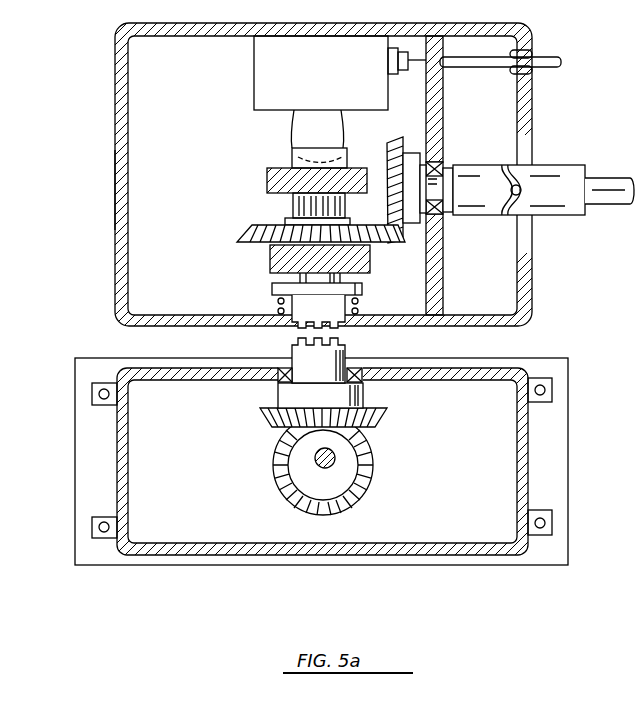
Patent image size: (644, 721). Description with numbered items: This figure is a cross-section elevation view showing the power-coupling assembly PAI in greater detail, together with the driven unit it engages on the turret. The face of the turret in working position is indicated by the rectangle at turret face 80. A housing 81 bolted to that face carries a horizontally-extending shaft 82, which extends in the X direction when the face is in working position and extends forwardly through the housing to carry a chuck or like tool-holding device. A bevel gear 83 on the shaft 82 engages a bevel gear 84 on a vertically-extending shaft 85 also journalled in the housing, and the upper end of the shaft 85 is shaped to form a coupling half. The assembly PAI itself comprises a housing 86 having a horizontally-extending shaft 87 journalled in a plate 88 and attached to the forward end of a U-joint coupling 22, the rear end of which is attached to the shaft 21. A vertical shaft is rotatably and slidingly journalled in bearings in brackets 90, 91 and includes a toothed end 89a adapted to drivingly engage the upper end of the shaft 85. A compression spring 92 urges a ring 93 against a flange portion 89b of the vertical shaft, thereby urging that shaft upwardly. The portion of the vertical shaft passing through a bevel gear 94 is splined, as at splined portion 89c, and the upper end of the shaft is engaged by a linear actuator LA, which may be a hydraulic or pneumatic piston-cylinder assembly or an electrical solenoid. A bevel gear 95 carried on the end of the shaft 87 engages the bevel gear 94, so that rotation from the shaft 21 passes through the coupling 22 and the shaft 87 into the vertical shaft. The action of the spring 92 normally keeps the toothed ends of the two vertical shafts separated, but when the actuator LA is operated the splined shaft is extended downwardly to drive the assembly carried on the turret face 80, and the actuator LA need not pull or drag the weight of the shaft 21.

The shaft 21 is at (612, 205).
The U-joint coupling 22 is at (560, 168).
The turret face 80 is at (73, 553).
The housing 81 is at (132, 478).
The shaft 82 is at (328, 468).
The bevel gear 83 is at (375, 467).
The bevel gear 84 is at (386, 410).
The shaft 85 is at (323, 372).
The housing 86 is at (532, 297).
The shaft 87 is at (447, 162).
The plate 88 is at (444, 266).
The toothed end 89a is at (293, 328).
The flange portion 89b is at (270, 288).
The splined portion 89c is at (293, 207).
The bracket 90 is at (269, 262).
The bracket 91 is at (266, 182).
The compression spring 92 is at (278, 304).
The ring 93 is at (361, 288).
The bevel gear 94 is at (247, 238).
The bevel gear 95 is at (388, 143).
The linear actuator LA is at (256, 84).
The power-coupling assembly PAI is at (108, 190).